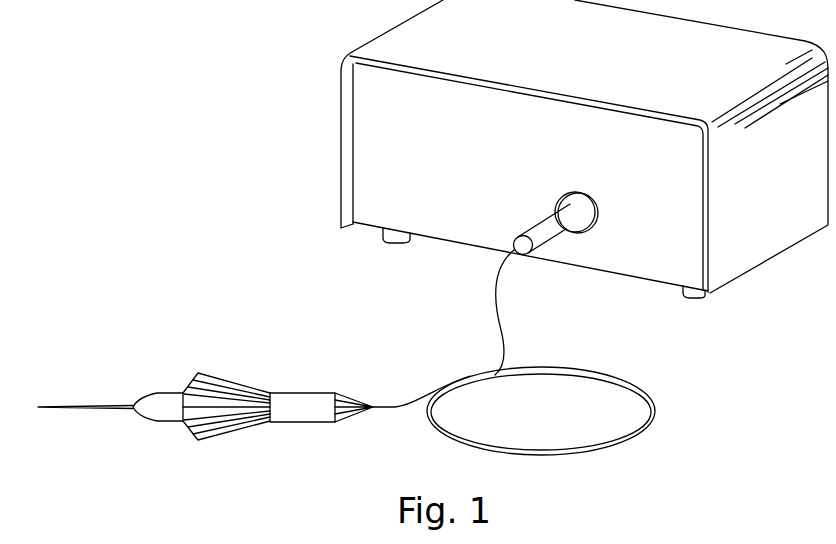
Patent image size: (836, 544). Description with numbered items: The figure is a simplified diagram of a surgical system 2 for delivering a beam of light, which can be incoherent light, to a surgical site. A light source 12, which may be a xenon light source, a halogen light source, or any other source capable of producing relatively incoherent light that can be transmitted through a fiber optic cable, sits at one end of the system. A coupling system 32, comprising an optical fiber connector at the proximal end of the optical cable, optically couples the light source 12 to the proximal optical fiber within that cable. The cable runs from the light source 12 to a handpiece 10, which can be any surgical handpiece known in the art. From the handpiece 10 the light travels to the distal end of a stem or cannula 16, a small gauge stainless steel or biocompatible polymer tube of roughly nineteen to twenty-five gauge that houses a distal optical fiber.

The surgical system 2 is at (221, 179).
The light source 12 is at (340, 93).
The coupling system 32 is at (360, 392).
The handpiece 10 is at (230, 380).
The stem (cannula) 16 is at (80, 402).